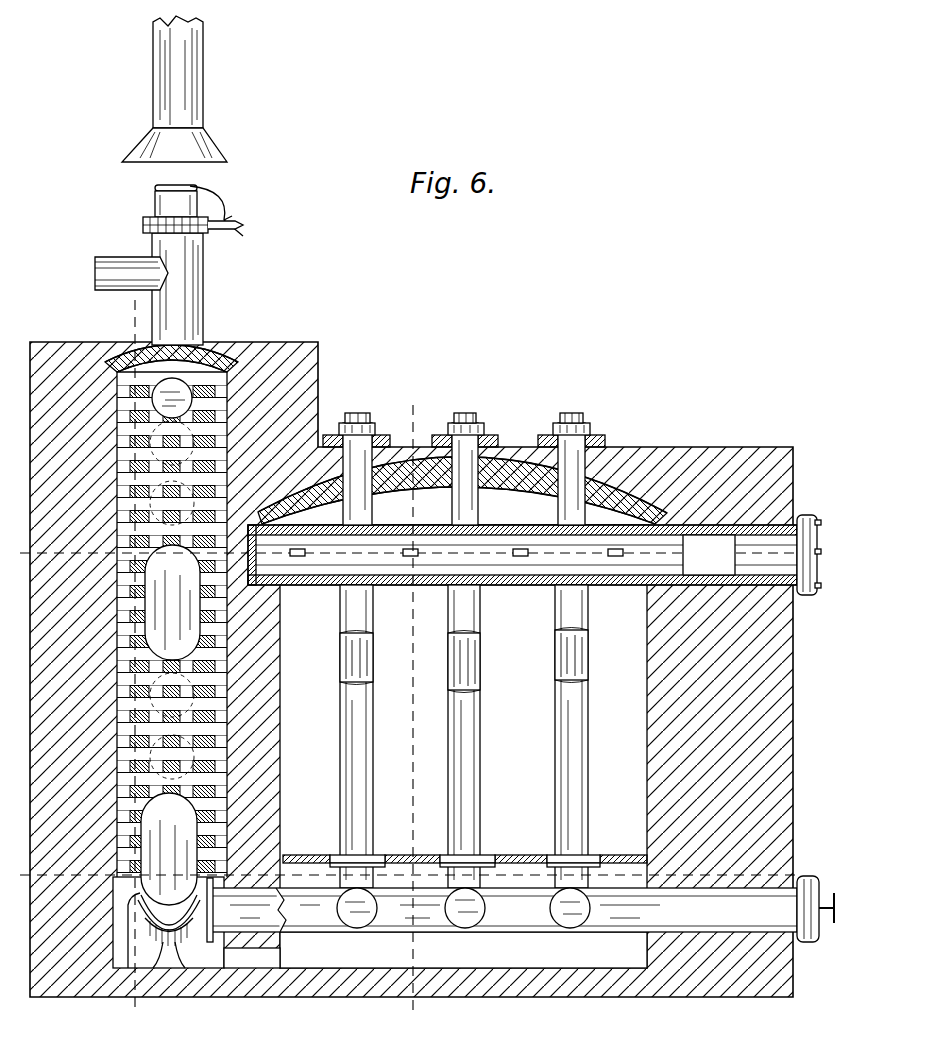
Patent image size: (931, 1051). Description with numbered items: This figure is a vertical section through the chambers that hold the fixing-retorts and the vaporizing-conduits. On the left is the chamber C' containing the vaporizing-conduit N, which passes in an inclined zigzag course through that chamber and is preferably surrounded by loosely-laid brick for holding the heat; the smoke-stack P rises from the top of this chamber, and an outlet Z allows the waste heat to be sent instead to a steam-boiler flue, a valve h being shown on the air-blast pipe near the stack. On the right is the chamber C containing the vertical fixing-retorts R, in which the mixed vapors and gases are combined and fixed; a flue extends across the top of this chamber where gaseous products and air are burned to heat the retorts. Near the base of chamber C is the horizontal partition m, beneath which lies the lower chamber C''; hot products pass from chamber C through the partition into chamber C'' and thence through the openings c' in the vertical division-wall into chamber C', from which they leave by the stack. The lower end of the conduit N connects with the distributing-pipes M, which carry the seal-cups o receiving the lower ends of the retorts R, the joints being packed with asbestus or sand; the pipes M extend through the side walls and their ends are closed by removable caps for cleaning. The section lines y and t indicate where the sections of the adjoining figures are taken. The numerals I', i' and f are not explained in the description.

The smoke-stack P is at (175, 180).
The valve h is at (160, 190).
The outlet Z is at (216, 634).
The section line y y is at (128, 667).
The vaporizing-conduit N is at (164, 673).
The chamber containing the vaporizing-conduits C' is at (144, 630).
The chamber containing the fixing-retorts C is at (462, 712).
The lower chamber C'' is at (463, 950).
The openings c' is at (252, 958).
The upper manifold I' is at (522, 570).
The manifold openings i' is at (456, 559).
The section line t t is at (818, 553).
The fixing-retorts R is at (464, 673).
The horizontal partition m is at (465, 852).
The seal-cups o is at (338, 877).
The distributing-pipes M is at (502, 910).
The end cap / section line f is at (425, 899).